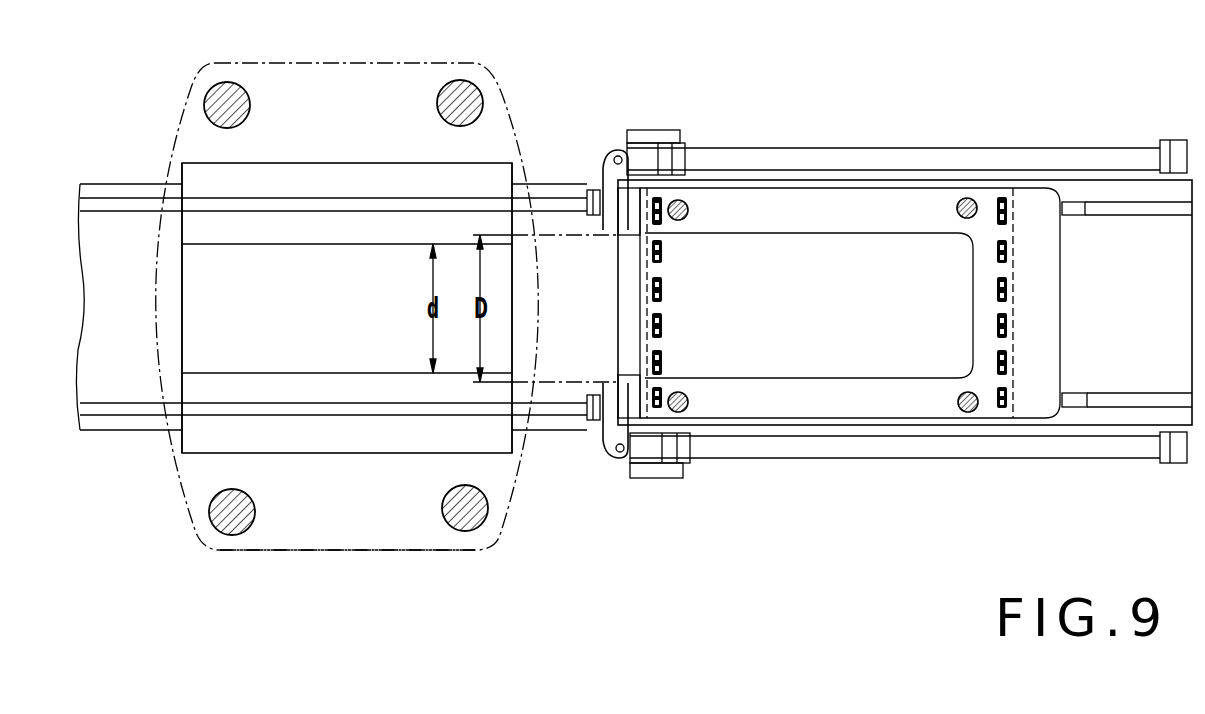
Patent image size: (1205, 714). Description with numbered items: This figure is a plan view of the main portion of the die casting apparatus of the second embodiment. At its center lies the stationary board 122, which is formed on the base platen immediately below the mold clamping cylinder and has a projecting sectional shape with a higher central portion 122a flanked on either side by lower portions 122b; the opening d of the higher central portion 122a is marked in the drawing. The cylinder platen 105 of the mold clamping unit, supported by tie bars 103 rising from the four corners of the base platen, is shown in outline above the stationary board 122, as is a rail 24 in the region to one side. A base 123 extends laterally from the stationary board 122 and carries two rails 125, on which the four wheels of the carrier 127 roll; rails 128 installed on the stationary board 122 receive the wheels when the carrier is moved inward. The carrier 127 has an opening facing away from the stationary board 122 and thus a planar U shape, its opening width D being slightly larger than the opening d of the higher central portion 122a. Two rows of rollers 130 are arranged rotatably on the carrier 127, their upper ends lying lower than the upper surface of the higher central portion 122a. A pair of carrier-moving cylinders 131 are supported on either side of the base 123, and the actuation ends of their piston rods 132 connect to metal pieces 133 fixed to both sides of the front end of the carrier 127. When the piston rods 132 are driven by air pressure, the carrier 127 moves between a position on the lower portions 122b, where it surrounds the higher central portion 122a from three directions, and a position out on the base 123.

The guide rail 24 is at (125, 432).
The tie bar 103 is at (465, 532).
The cylinder platen 105 is at (260, 552).
The stationary board 122 is at (560, 52).
The higher central portion 122a is at (213, 297).
The lower portion 122b is at (323, 568).
The base 123 is at (533, 430).
The rail 125 is at (1075, 475).
The carrier 127 is at (798, 405).
The rail 128 is at (380, 568).
The roller 130 is at (1002, 200).
The carrier-moving cylinder 131 is at (922, 100).
The piston rod 132 is at (652, 513).
The metal piece 133 is at (602, 115).